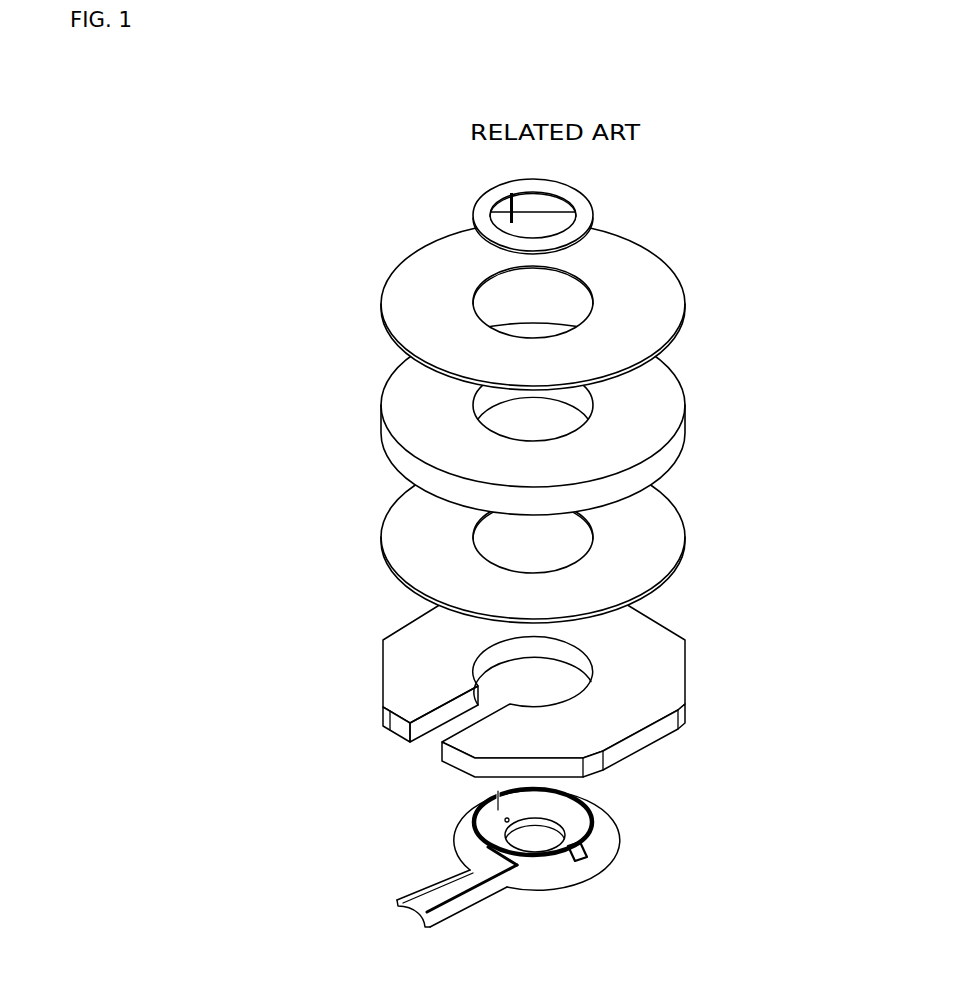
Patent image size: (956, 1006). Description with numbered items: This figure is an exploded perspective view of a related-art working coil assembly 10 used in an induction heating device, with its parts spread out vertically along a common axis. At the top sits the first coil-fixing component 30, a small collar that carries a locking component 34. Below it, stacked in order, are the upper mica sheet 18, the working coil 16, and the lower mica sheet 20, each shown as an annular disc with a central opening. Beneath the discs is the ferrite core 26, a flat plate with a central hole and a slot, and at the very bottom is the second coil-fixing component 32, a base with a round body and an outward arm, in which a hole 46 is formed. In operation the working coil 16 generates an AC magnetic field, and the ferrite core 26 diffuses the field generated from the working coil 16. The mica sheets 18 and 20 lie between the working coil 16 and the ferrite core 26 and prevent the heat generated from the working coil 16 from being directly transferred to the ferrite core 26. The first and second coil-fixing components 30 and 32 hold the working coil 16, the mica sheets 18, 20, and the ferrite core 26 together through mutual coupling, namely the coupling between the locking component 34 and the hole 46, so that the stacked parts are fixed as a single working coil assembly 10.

The working coil assembly 10 is at (401, 777).
The working coil 16 is at (662, 408).
The mica sheet 18 is at (663, 300).
The mica sheet 20 is at (665, 537).
The ferrite core 26 is at (668, 666).
The first coil-fixing component 30 is at (488, 222).
The second coil-fixing component 32 is at (490, 830).
The locking component 34 is at (510, 204).
The hole 46 is at (590, 856).